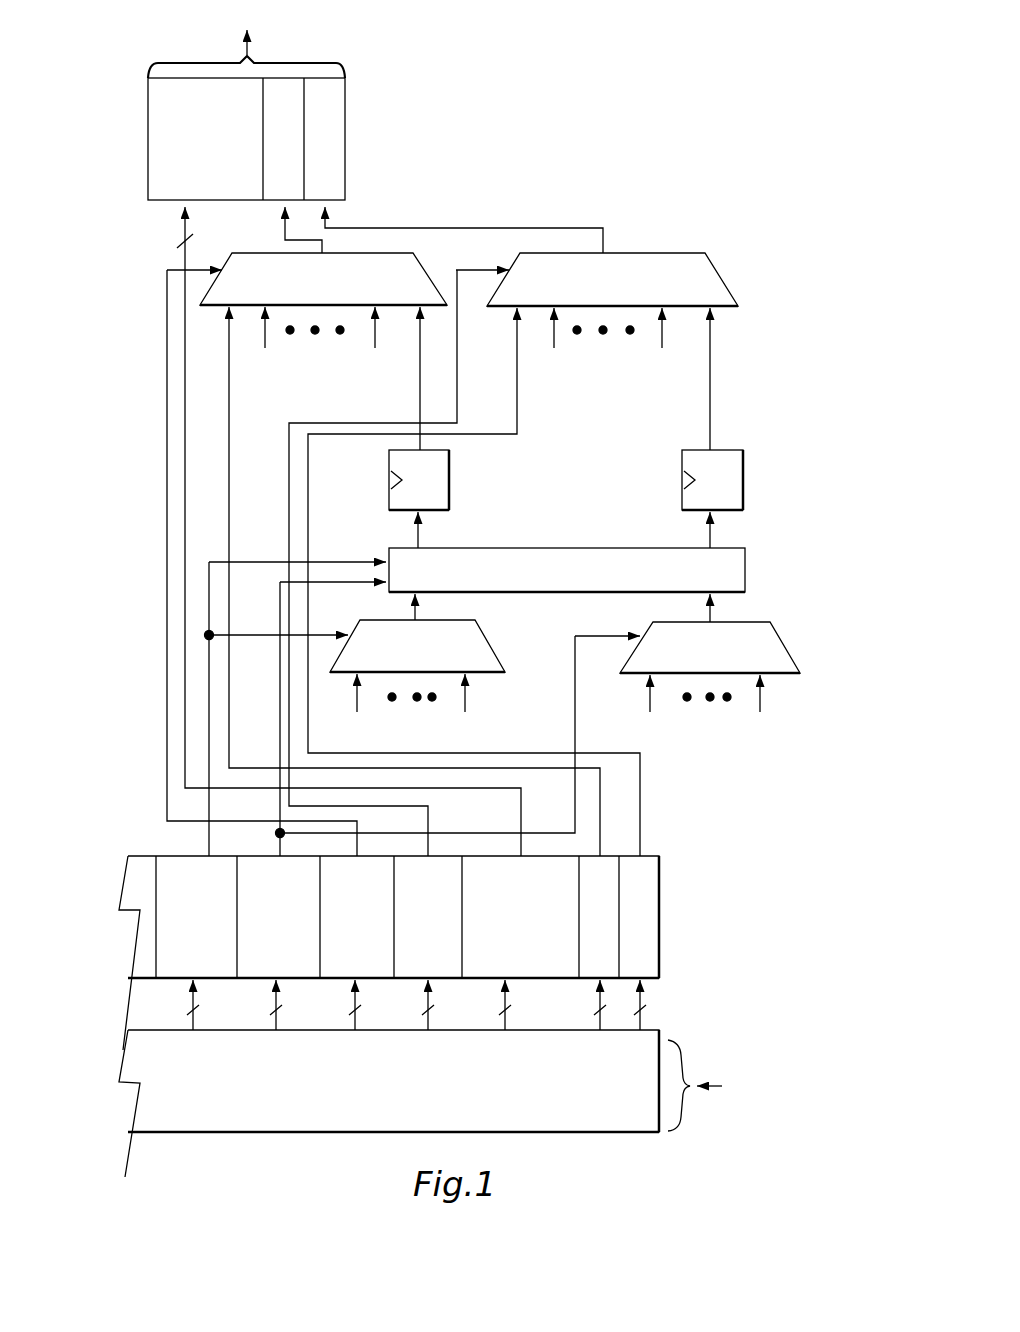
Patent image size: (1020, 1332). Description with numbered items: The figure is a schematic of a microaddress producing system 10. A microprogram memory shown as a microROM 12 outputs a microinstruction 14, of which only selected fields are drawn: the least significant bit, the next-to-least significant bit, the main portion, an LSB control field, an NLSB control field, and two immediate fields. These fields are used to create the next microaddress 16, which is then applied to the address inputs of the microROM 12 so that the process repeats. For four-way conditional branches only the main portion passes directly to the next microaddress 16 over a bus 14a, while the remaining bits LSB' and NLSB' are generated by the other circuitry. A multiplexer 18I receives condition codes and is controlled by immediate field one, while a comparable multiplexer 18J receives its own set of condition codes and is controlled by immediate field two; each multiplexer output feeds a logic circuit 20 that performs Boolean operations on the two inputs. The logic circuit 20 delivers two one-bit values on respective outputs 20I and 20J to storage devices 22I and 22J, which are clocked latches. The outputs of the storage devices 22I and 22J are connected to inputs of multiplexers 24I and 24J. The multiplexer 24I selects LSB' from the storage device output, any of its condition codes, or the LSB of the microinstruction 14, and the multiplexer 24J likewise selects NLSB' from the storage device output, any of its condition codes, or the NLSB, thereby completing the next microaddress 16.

The microaddress producing system 10 is at (612, 157).
The microROM 12 is at (504, 1103).
The microinstruction 14 is at (678, 917).
The bus 14a is at (186, 480).
The next microaddress 16 is at (140, 156).
The multiplexer 18J is at (355, 683).
The multiplexer 18I is at (687, 684).
The logic circuit 20 is at (477, 585).
The output 20J is at (419, 537).
The output 20I is at (708, 537).
The storage device 22J is at (451, 480).
The storage device 22I is at (745, 480).
The multiplexer 24J is at (307, 328).
The multiplexer 24I is at (531, 328).